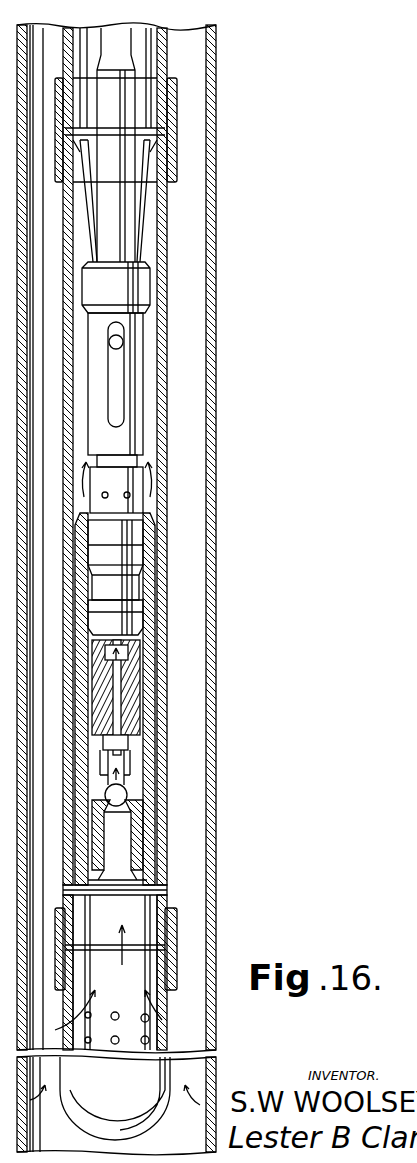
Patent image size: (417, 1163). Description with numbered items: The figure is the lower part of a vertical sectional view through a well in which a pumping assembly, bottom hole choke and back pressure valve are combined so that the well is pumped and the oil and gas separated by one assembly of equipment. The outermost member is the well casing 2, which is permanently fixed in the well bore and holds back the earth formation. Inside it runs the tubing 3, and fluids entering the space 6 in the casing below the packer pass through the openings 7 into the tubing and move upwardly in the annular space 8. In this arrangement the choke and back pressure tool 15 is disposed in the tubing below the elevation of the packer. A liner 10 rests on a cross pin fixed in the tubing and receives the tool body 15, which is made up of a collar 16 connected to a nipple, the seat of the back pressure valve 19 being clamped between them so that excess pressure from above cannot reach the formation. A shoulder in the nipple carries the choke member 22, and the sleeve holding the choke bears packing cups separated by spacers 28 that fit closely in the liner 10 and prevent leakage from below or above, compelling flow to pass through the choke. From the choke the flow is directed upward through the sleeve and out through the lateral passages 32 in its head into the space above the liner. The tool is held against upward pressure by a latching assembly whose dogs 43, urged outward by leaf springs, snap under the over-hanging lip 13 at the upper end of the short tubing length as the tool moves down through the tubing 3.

The well casing 2 is at (212, 347).
The tubing 3 is at (180, 278).
The over-hanging lip 13 is at (165, 140).
The dogs 43 is at (145, 205).
The assembly or body 15 is at (128, 433).
The lateral passages 32 is at (135, 496).
The spacers 28 is at (135, 555).
The liner 10 is at (145, 613).
The choke member 22 is at (120, 694).
The back pressure valve 19 is at (125, 795).
The collar 16 is at (140, 860).
The space 6 is at (185, 940).
The annular space 8 is at (108, 972).
The openings 7 is at (165, 1040).